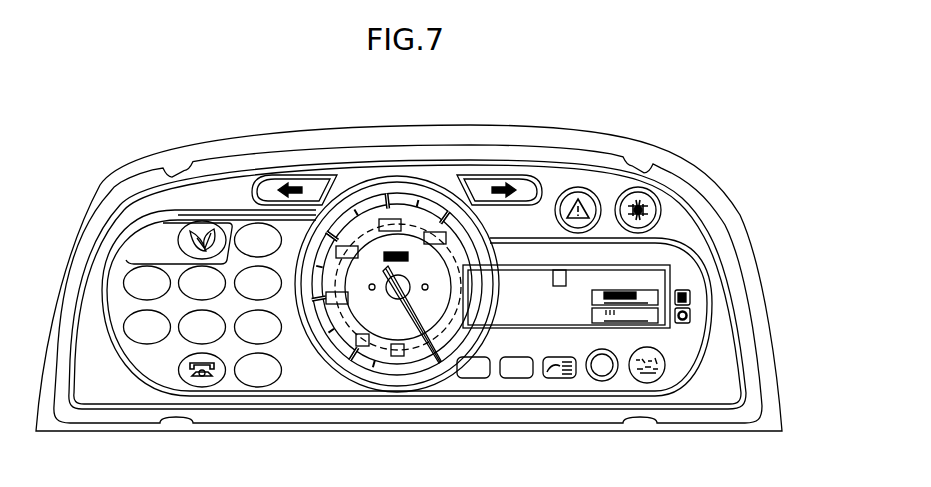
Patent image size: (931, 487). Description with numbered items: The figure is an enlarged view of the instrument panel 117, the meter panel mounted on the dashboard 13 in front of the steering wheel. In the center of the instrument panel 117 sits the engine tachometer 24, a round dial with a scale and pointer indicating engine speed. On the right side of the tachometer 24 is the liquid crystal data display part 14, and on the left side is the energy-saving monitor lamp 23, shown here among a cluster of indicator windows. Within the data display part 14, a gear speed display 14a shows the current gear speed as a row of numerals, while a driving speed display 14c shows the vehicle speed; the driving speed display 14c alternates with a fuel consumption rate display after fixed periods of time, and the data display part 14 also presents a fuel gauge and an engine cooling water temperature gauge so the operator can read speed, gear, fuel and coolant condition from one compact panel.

The dashboard 13 is at (747, 239).
The liquid crystal data display part 14 is at (627, 324).
The gear speed display 14a is at (632, 265).
The driving speed display 14c is at (560, 327).
The energy-saving monitor lamp 23 is at (158, 237).
The engine tachometer 24 is at (408, 201).
The instrument panel 117 is at (565, 184).